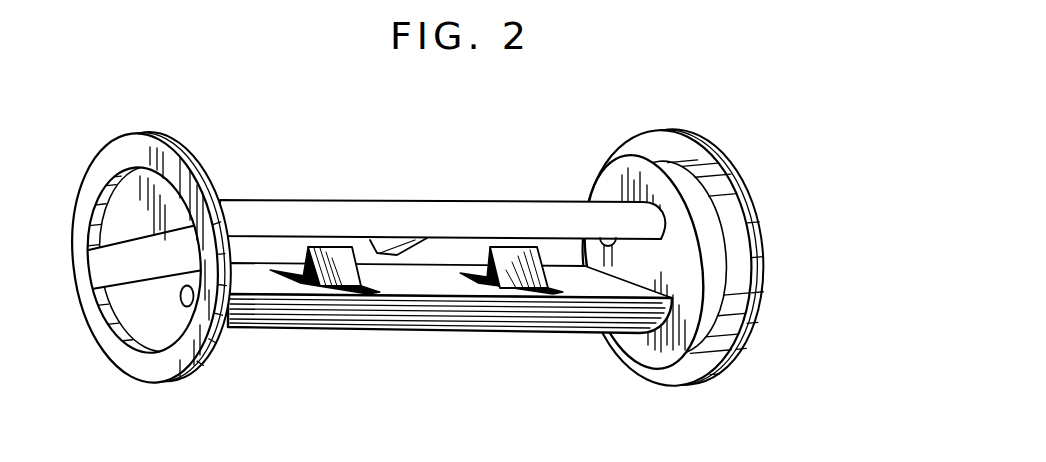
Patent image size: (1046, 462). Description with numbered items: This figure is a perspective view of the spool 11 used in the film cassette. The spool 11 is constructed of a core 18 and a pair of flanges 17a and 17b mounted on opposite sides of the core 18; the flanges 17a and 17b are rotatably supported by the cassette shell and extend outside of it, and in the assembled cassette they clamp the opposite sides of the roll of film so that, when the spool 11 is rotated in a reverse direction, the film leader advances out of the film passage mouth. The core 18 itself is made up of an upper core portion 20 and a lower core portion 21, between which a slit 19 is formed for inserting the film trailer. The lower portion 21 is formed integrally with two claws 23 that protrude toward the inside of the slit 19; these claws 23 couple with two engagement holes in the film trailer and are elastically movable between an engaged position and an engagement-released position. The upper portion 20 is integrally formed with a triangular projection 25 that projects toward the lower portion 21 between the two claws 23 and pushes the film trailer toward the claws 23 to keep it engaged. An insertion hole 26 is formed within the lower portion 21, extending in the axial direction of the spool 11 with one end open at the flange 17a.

The spool 11 is at (752, 333).
The flange 17a is at (207, 165).
The flange 17b is at (700, 188).
The core 18 is at (363, 399).
The slit 19 is at (614, 238).
The upper core portion 20 is at (263, 328).
The lower core portion 21 is at (343, 328).
The claws 23 is at (337, 250).
The triangular projection 25 is at (402, 251).
The insertion hole 26 is at (186, 307).